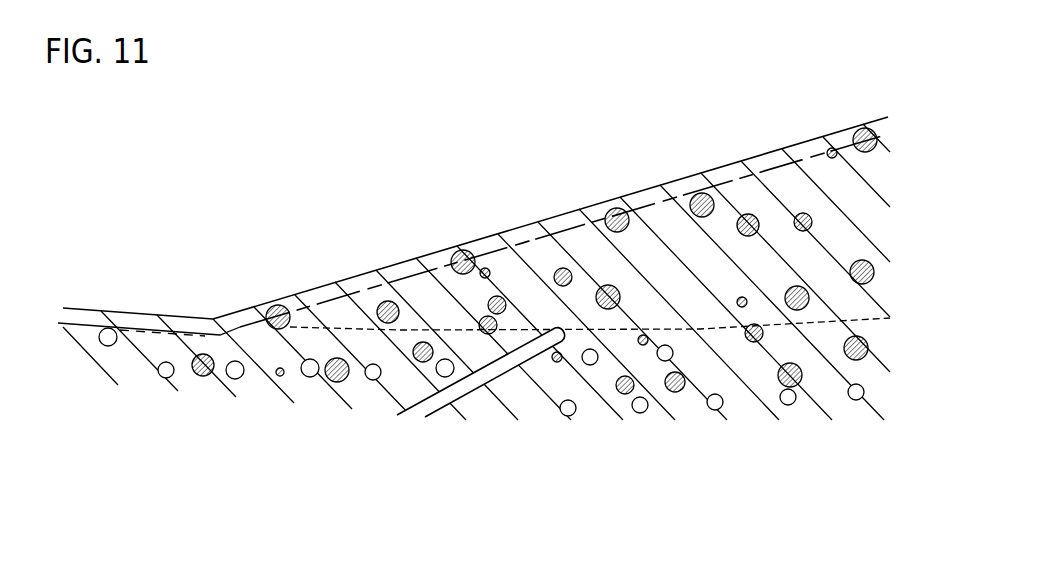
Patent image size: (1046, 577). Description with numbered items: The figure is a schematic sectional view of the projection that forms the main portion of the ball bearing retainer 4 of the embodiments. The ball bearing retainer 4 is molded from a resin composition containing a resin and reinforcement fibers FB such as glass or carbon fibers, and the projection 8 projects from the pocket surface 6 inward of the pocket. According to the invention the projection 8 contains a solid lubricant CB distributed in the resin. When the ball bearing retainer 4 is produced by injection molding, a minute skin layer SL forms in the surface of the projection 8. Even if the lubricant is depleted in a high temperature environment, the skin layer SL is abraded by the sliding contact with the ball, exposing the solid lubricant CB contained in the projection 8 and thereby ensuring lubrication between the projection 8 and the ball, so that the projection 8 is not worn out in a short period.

The ball bearing retainer 4 is at (851, 424).
The pocket surface 6 is at (125, 313).
The projection 8 is at (727, 167).
The skin layer SL is at (798, 150).
The solid lubricant CB is at (276, 305).
The reinforcement fiber FB is at (310, 370).